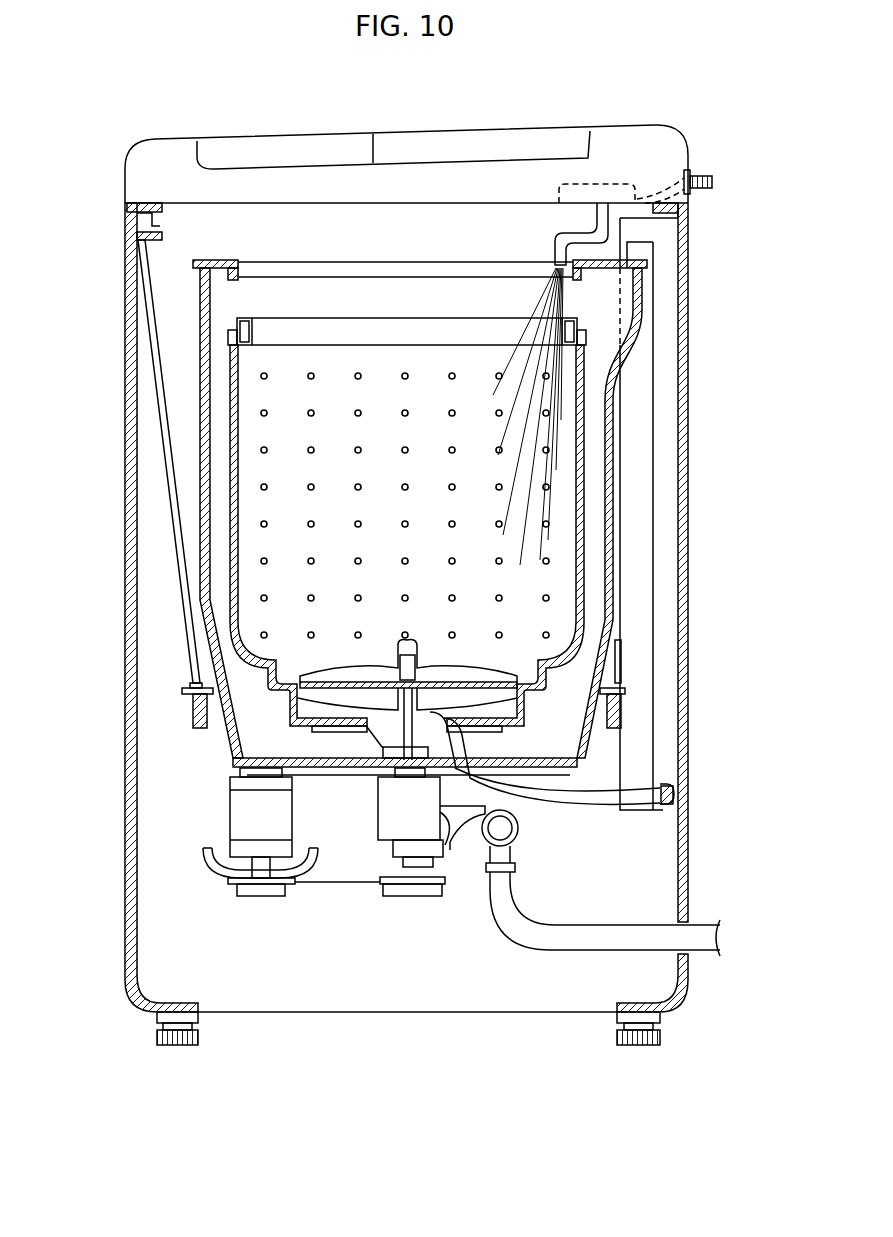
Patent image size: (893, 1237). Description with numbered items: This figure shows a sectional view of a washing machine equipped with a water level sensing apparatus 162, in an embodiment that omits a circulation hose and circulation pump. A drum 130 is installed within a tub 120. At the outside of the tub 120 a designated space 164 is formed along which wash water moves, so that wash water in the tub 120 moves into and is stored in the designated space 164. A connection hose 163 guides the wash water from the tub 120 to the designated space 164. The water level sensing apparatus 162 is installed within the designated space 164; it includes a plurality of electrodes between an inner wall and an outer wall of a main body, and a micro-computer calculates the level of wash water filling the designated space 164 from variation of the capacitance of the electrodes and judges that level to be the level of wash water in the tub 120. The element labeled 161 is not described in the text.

The tub 120 is at (205, 386).
The drum 130 is at (232, 457).
The drain hose 161 is at (668, 790).
The water level sensing apparatus 162 is at (641, 563).
The connection hose 163 is at (655, 800).
The designated space 164 is at (663, 508).